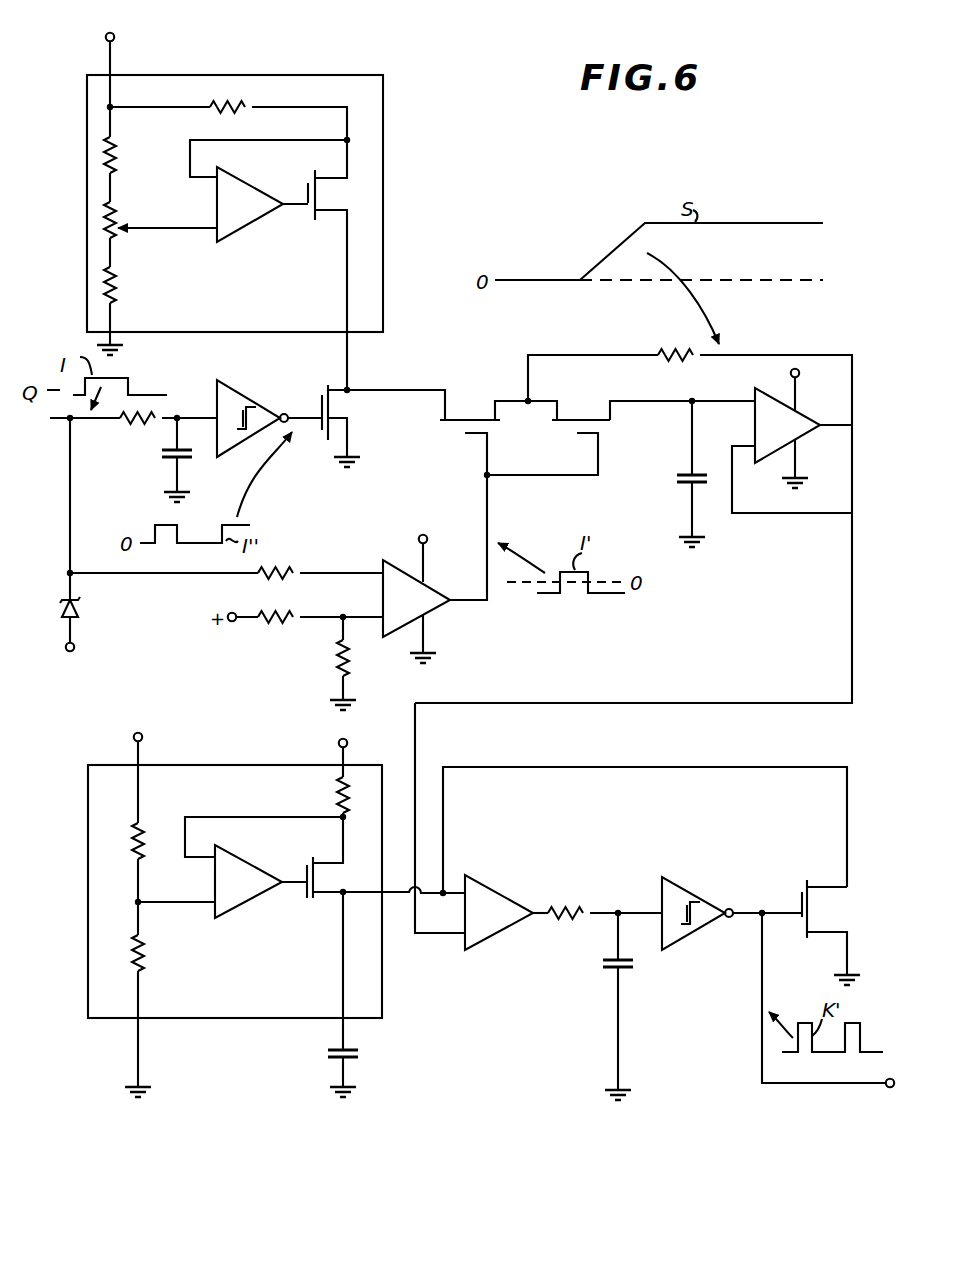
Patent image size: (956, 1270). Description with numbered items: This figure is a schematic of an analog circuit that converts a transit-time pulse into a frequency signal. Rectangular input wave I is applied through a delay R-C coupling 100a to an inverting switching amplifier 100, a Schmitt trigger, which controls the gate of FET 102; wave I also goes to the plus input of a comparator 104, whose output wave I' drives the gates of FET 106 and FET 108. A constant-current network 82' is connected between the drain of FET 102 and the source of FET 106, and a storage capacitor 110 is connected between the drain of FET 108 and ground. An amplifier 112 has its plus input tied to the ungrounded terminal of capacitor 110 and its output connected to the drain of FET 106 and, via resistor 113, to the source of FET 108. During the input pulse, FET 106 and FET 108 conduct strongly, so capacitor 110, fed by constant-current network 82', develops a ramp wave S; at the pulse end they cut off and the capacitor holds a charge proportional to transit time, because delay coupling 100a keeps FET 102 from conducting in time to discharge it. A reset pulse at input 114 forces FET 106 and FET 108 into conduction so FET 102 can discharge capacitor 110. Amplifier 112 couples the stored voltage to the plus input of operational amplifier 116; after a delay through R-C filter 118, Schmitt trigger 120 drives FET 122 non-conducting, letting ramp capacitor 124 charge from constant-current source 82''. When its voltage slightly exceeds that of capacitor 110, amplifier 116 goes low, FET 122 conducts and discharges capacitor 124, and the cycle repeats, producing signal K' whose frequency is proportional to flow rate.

The constant-current network 82' is at (260, 200).
The constant-current source 82'' is at (248, 903).
The inverting switching amplifier 100 is at (273, 377).
The delay R-C coupling 100a is at (118, 427).
The FET 102 is at (326, 386).
The comparator 104 is at (438, 594).
The FET 106 is at (454, 424).
The FET 108 is at (578, 411).
The storage capacitor 110 is at (670, 485).
The amplifier 112 is at (752, 391).
The resistor 113 is at (684, 342).
The reset input 114 is at (74, 646).
The operational amplifier 116 is at (487, 881).
The R-C filter 118 is at (552, 918).
The Schmitt trigger 120 is at (695, 932).
The FET 122 is at (803, 885).
The ramp capacitor 124 is at (372, 1058).